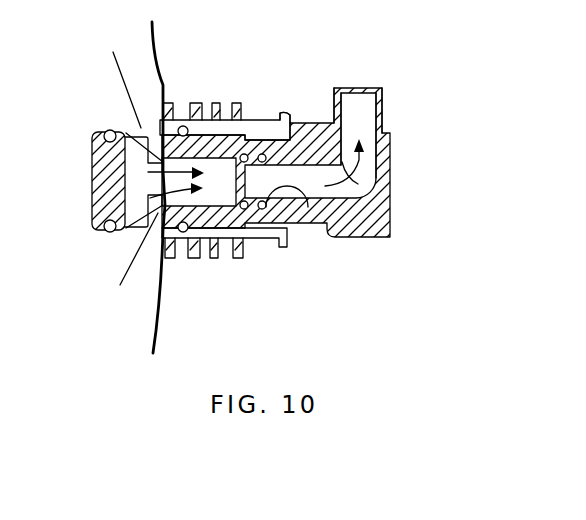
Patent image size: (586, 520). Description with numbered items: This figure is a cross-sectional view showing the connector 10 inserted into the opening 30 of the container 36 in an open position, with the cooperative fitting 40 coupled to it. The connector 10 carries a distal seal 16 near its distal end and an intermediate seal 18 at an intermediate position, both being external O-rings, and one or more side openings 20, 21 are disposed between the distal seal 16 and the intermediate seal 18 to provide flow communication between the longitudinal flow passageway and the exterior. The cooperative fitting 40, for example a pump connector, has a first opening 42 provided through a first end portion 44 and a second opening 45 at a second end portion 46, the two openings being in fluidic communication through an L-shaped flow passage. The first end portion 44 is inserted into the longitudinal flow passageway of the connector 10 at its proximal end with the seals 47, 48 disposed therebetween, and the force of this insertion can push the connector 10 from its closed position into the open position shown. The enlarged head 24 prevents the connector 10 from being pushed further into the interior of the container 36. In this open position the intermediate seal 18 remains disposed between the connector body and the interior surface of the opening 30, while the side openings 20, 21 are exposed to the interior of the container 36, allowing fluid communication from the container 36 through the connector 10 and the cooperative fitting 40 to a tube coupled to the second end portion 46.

The connector 10 is at (270, 264).
The distal seal 16 is at (103, 233).
The intermediate seal 18 is at (182, 240).
The side opening 20 is at (148, 136).
The side opening 21 is at (148, 216).
The enlarged head 24 is at (285, 118).
The opening 30 is at (188, 93).
The container 36 is at (152, 23).
The cooperative fitting 40 is at (372, 264).
The first opening 42 is at (233, 177).
The first end portion 44 is at (308, 207).
The second opening 45 is at (358, 98).
The second end portion 46 is at (383, 98).
The seal 47 is at (246, 154).
The seal 48 is at (264, 154).